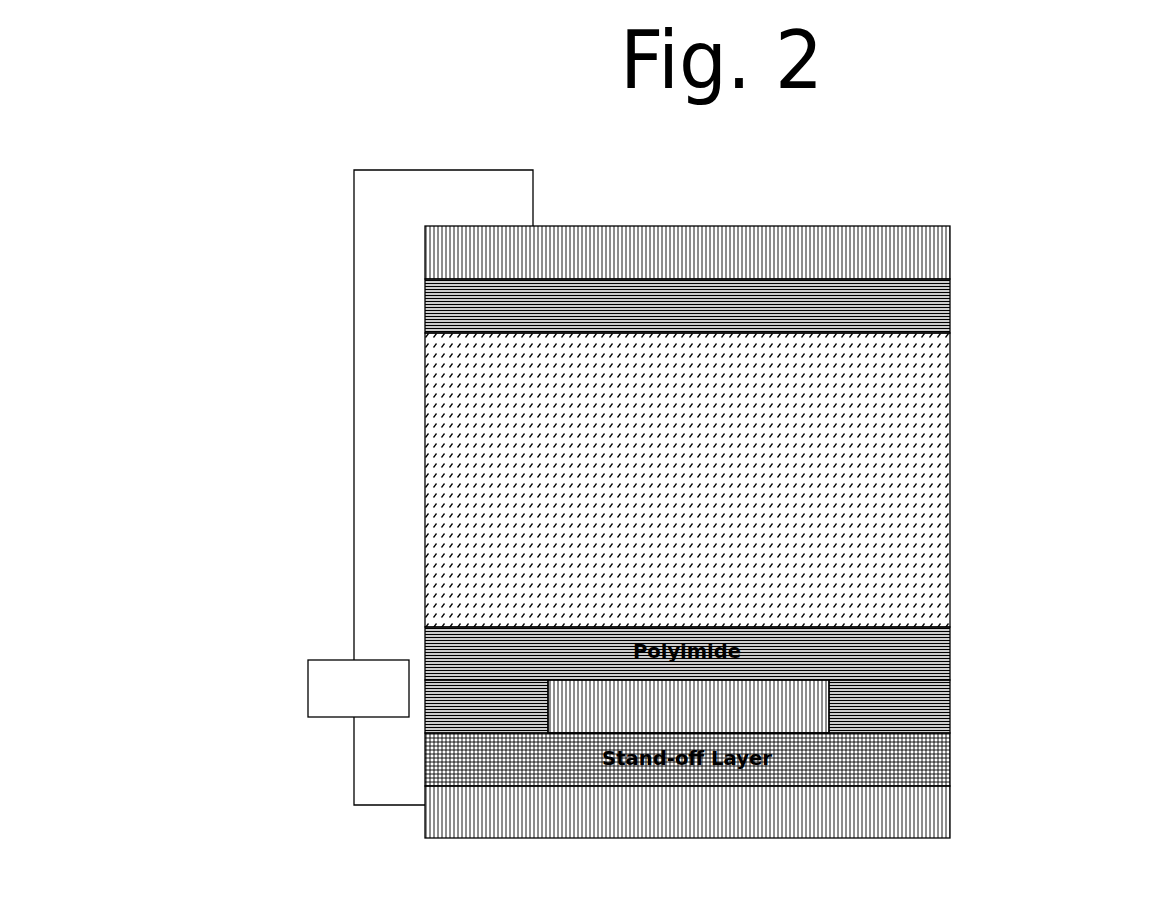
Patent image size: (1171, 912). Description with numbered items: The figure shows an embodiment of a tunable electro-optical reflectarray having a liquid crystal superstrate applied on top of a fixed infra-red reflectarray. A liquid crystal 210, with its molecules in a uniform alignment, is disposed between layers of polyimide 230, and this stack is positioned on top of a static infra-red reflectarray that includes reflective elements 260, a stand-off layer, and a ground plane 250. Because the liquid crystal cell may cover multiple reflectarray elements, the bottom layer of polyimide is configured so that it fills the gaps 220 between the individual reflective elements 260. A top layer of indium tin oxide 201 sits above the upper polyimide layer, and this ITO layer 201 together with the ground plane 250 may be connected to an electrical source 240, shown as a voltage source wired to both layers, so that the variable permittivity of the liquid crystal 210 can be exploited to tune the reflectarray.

The top layer of indium tin oxide (ITO) 201 is at (950, 232).
The layers of polyimide 230 is at (943, 311).
The liquid crystal 210 is at (948, 560).
The reflective elements 260 is at (829, 702).
The gaps between individual reflectarray elements 220 is at (945, 718).
The ground plane 250 is at (945, 838).
The electrical source 240 is at (338, 717).